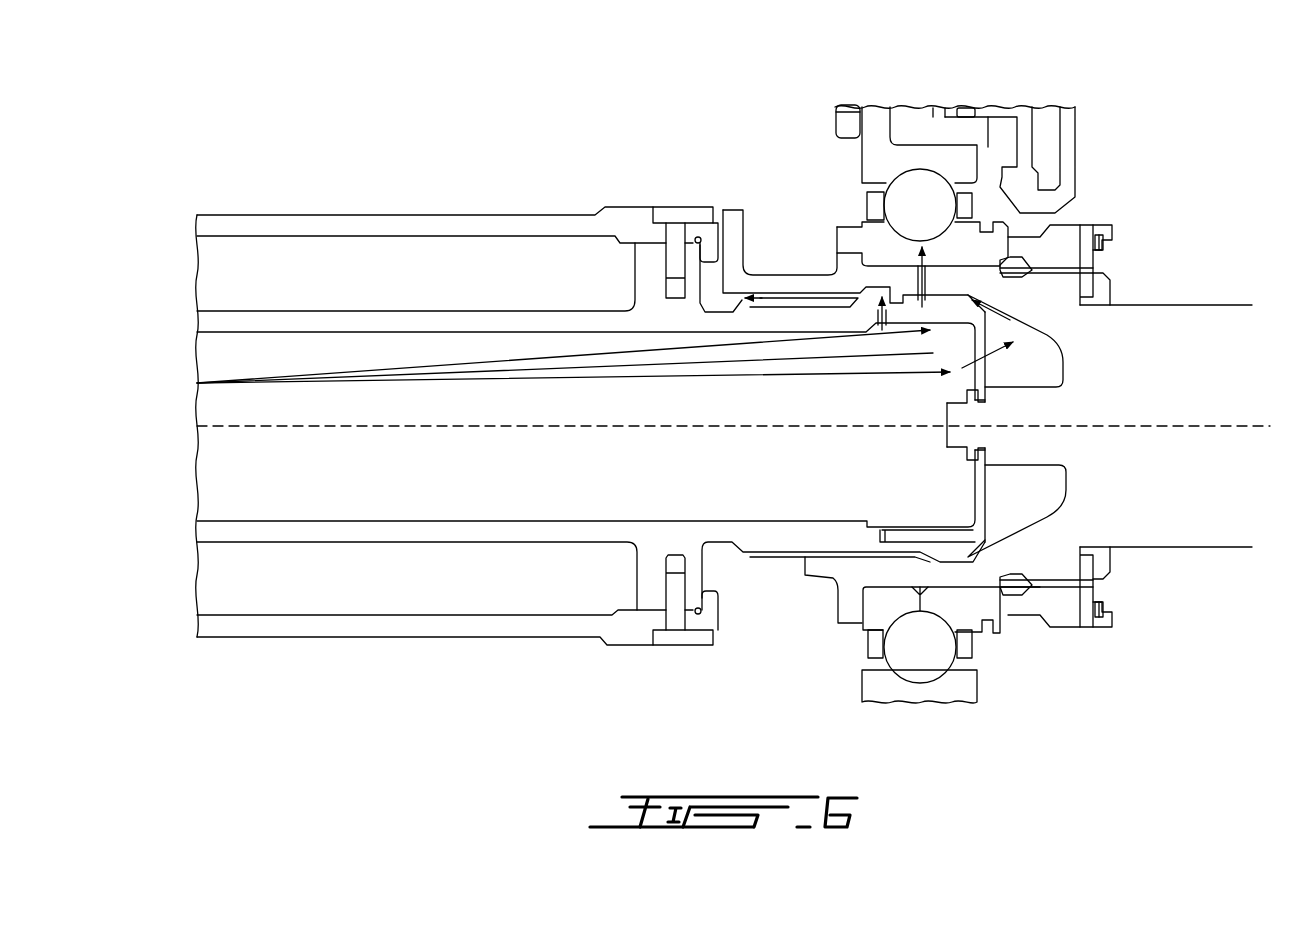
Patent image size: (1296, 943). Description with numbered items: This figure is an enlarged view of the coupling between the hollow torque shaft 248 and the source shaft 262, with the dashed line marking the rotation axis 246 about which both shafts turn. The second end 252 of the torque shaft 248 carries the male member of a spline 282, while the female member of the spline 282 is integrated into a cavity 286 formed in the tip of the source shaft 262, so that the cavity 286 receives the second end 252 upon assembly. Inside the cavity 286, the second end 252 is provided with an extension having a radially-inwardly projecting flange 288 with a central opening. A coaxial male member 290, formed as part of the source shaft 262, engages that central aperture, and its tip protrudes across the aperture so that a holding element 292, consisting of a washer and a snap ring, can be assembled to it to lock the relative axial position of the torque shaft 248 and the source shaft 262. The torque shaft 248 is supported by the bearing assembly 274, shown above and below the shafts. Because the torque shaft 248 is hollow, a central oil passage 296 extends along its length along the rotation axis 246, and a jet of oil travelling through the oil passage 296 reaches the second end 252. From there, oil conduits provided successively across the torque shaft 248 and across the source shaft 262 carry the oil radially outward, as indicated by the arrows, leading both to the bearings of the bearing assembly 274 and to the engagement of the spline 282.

The rotation axis 246 is at (257, 427).
The torque shaft 248 is at (445, 533).
The second end 252 is at (913, 535).
The source shaft 262 is at (1208, 497).
The bearing assembly 274 is at (935, 158).
The spline 282 is at (802, 578).
The cavity 286 is at (1043, 500).
The radially-inwardly projecting flange 288 is at (980, 498).
The coaxial male member 290 is at (1022, 413).
The holding element 292 is at (957, 448).
The oil passage 296 is at (455, 402).